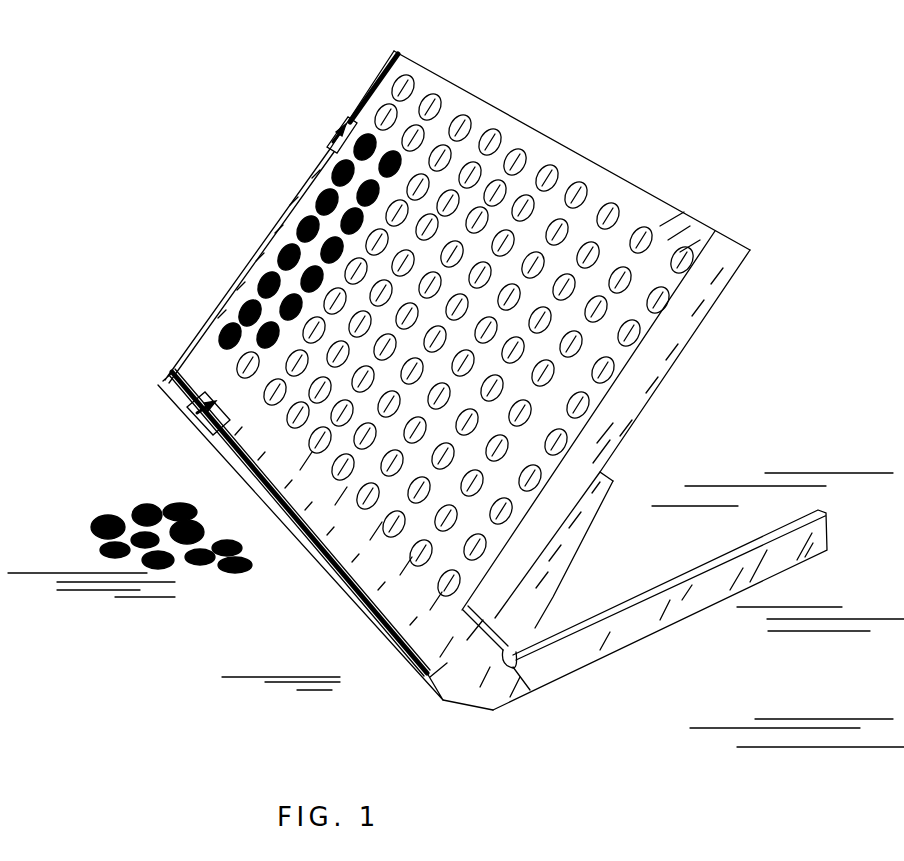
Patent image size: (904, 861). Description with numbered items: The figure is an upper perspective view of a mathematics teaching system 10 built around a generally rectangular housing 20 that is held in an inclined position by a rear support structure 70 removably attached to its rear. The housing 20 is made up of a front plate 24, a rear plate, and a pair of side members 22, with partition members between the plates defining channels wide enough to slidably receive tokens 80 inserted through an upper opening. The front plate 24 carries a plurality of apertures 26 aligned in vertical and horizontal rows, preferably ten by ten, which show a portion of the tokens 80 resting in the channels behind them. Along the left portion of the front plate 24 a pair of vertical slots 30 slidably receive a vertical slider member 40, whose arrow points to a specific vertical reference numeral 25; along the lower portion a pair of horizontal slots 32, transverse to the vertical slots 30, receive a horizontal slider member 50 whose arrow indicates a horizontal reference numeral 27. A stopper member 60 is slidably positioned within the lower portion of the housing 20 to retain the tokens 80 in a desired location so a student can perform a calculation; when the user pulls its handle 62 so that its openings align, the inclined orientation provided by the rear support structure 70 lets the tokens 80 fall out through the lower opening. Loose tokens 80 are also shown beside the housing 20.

The mathematics teaching system 10 is at (790, 185).
The housing 20 is at (719, 319).
The side members 22 is at (660, 370).
The front plate 24 is at (663, 215).
The vertical reference numerals 25 is at (297, 193).
The apertures 26 is at (412, 80).
The horizontal reference numerals 27 is at (405, 668).
The vertical slots 30 is at (398, 60).
The horizontal slots 32 is at (318, 548).
The vertical slider member 40 is at (333, 140).
The horizontal slider member 50 is at (213, 432).
The stopper member 60 is at (507, 627).
The handle 62 is at (528, 678).
The rear support structure 70 is at (643, 582).
The tokens 80 is at (225, 573).